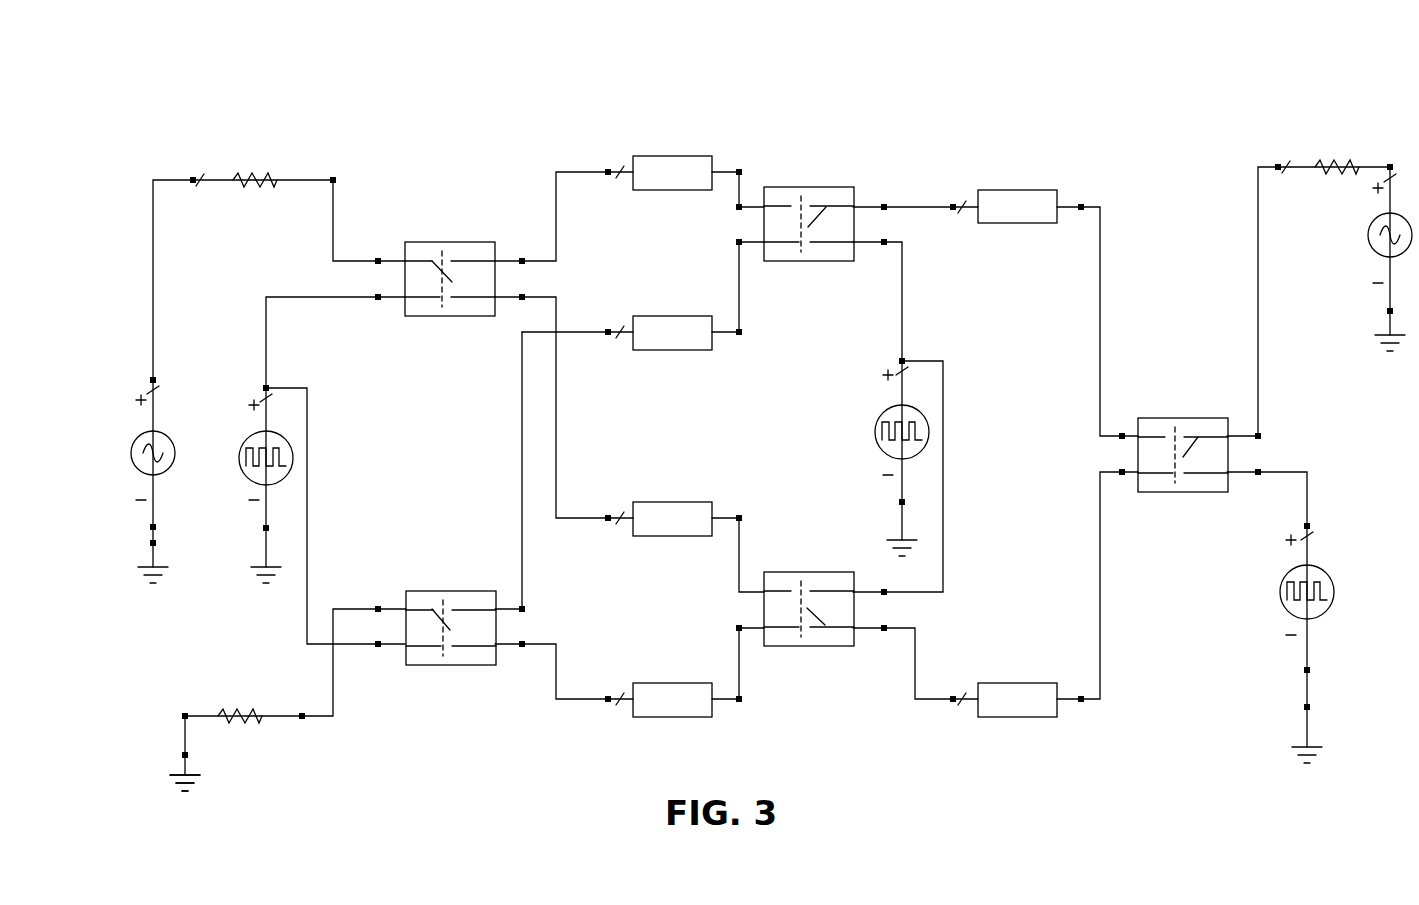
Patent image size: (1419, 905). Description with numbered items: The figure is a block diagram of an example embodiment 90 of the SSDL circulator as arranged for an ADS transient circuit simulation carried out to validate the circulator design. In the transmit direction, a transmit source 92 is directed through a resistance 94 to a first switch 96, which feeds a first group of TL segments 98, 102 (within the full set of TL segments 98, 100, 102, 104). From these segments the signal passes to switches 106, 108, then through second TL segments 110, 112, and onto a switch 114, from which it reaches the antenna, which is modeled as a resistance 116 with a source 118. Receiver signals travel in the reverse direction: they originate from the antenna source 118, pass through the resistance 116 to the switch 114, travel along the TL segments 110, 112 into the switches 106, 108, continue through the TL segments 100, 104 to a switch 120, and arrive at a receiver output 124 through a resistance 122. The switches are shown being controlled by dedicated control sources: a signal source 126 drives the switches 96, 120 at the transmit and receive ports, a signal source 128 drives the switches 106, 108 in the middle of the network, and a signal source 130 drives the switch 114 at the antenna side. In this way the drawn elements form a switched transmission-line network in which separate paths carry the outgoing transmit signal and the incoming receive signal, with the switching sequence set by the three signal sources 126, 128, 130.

The example embodiment 90 is at (203, 122).
The transmit source 92 is at (170, 440).
The resistance 94 is at (263, 176).
The first switch 96 is at (432, 242).
The TL segment 98 is at (658, 156).
The TL segment 100 is at (658, 316).
The TL segment 102 is at (658, 502).
The TL segment 104 is at (658, 683).
The switch 106 is at (825, 187).
The switch 108 is at (787, 572).
The second TL segment 110 is at (1003, 190).
The second TL segment 112 is at (1000, 683).
The switch 114 is at (1160, 418).
The resistance 116 is at (1335, 165).
The source 118 is at (1368, 238).
The switch 120 is at (452, 590).
The resistance 122 is at (222, 712).
The receiver output 124 is at (200, 714).
The signal source 126 is at (238, 460).
The signal source 128 is at (874, 430).
The signal source 130 is at (1280, 596).